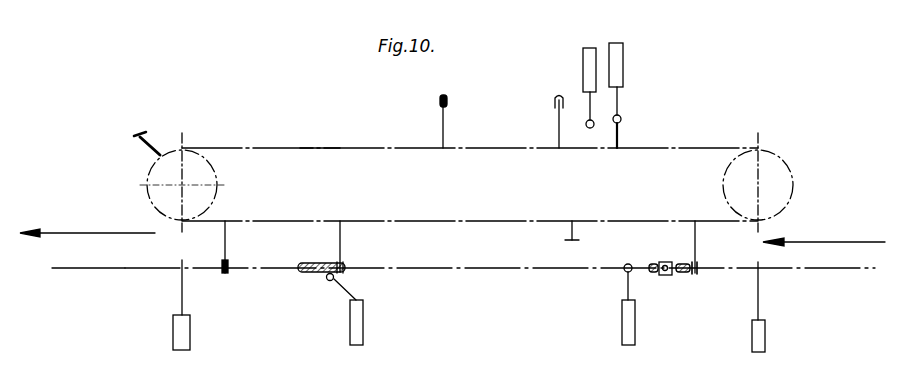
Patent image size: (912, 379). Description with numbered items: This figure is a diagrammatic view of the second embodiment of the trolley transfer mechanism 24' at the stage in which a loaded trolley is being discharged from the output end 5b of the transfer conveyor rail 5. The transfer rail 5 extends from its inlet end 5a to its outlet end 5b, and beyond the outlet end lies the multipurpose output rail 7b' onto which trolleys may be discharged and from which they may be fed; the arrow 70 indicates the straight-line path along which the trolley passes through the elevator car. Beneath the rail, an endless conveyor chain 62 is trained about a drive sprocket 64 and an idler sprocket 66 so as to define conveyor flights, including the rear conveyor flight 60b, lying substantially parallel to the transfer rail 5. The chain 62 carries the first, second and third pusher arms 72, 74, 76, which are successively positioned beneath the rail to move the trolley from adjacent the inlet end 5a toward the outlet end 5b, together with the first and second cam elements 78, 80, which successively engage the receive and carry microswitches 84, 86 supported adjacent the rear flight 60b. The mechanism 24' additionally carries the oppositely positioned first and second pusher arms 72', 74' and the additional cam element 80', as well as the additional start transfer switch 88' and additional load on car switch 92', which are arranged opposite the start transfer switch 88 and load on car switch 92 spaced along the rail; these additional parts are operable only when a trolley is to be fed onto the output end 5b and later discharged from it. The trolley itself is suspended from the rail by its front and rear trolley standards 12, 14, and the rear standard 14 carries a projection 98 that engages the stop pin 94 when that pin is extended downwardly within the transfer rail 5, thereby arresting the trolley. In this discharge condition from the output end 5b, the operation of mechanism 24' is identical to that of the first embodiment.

The rear conveyor flight 60b is at (268, 148).
The endless conveyor chain 62 is at (372, 147).
The drive sprocket 64 is at (216, 172).
The idler sprocket 66 is at (736, 160).
The transfer mechanism 24' is at (770, 92).
The transfer conveyor rail 5 is at (459, 250).
The inlet end 5a is at (845, 262).
The outlet end 5b is at (104, 262).
The multipurpose output rail 7b' is at (43, 288).
The arrow 70 is at (70, 232).
The first pusher arm 72 is at (243, 247).
The additional first pusher arm 72' is at (423, 121).
The second pusher arm 74 is at (363, 247).
The additional second pusher arm 74' is at (539, 122).
The third pusher arm 76 is at (697, 247).
The first cam element 78 is at (568, 240).
The second cam element 80 is at (644, 124).
The additional cam element 80' is at (161, 132).
The receive microswitch 84 is at (589, 48).
The carry microswitch 86 is at (625, 45).
The start transfer switch 88 is at (781, 307).
The additional start transfer switch 88' is at (208, 305).
The load on car switch 92 is at (366, 310).
The additional load on car switch 92' is at (606, 304).
The front trolley standard 12 is at (308, 275).
The rear trolley standard 14 is at (658, 262).
The stop pin 94 is at (662, 277).
The projection 98 is at (680, 277).